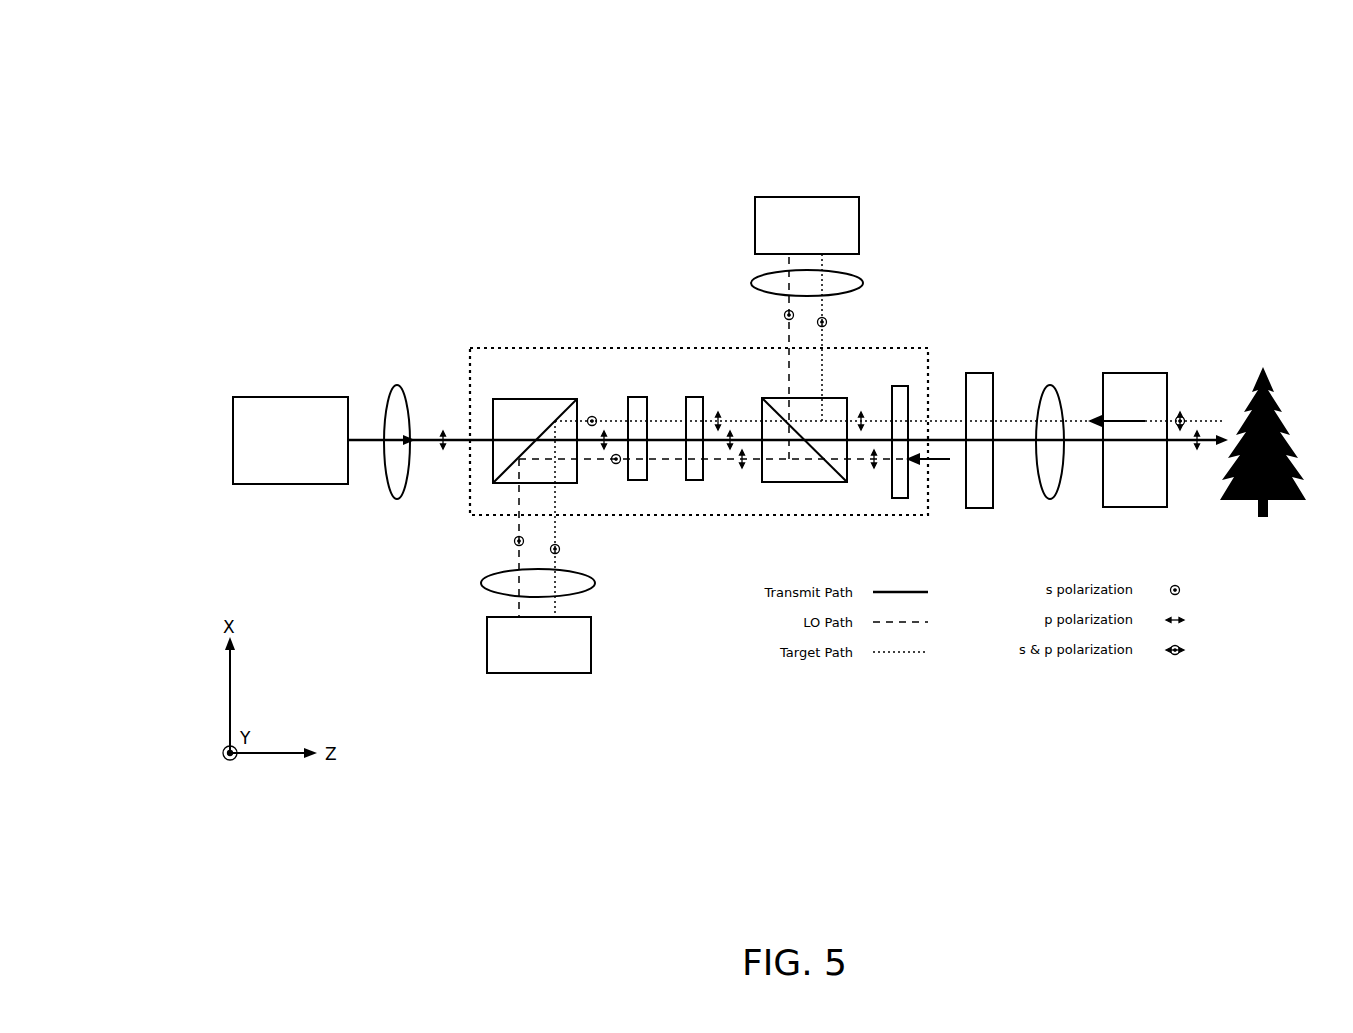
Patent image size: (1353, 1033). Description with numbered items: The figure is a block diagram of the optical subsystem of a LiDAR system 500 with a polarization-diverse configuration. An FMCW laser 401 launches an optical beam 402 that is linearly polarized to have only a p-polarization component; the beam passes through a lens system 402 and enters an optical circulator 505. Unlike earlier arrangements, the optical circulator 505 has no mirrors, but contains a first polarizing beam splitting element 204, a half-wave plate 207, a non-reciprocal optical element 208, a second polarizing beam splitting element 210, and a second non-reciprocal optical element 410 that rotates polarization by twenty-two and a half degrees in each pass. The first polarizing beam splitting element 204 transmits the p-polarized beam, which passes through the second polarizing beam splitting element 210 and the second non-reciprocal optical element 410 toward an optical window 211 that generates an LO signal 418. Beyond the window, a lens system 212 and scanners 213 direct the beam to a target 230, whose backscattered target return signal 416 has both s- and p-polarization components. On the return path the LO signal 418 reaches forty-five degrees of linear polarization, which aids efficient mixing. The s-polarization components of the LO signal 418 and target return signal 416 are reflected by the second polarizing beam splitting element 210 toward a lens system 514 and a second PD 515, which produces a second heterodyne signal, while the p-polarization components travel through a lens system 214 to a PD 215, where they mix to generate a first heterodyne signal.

The LiDAR system 500 is at (200, 103).
The FMCW laser 401 is at (262, 400).
The optical beam 402 is at (373, 437).
The optical circulator 505 is at (666, 345).
The first polarizing beam splitting element 204 is at (542, 402).
The half-wave plate 207 is at (627, 405).
The non-reciprocal optical element 208 is at (687, 403).
The second polarizing beam splitting element 210 is at (787, 398).
The second non-reciprocal optical element 410 is at (913, 398).
The LO signal 418 is at (914, 462).
The optical window 211 is at (992, 383).
The lens system 212 is at (1058, 397).
The scanners 213 is at (1167, 380).
The target return signal 416 is at (1105, 417).
The target 230 is at (1273, 423).
The second PD 515 is at (805, 197).
The lens system 514 is at (857, 277).
The lens system 214 is at (503, 572).
The PD 215 is at (487, 652).